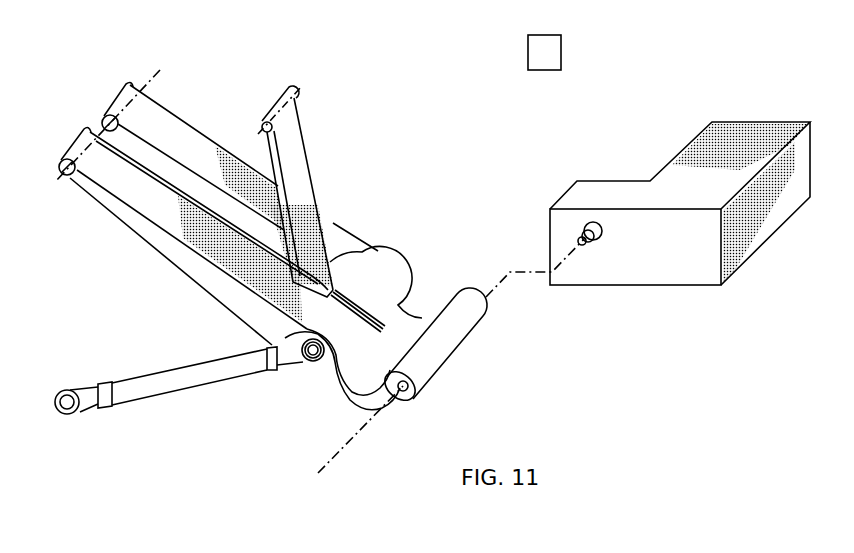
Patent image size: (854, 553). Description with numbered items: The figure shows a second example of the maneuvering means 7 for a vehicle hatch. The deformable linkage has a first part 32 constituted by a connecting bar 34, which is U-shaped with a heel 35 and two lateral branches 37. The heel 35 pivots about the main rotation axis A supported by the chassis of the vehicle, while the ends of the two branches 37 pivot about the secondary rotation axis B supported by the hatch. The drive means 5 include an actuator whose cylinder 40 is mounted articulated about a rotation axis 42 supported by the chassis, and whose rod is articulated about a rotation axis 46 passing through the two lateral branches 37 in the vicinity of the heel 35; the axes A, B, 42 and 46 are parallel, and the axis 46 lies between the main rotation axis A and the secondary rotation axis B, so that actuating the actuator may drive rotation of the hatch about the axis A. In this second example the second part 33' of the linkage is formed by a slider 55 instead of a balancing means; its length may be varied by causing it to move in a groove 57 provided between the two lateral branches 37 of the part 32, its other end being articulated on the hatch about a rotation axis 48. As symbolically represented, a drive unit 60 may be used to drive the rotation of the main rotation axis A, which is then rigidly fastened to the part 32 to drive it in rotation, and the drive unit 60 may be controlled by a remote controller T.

The drive means 5 is at (228, 382).
The maneuvering means 7 is at (364, 198).
The first part of the linkage 32 is at (148, 254).
The second part of the linkage 33' is at (339, 161).
The connecting bar 34 is at (177, 274).
The heel 35 is at (346, 396).
The lateral branches 37 is at (186, 119).
The cylinder 40 is at (162, 405).
The rotation axis 42 is at (67, 411).
The rotation axis 46 is at (313, 362).
The rotation axis 48 is at (298, 90).
The slider 55 is at (318, 200).
The groove 57 is at (362, 300).
The drive unit 60 is at (747, 116).
The main rotation axis A is at (356, 445).
The secondary rotation axis B is at (146, 72).
The remote controller T is at (633, 155).